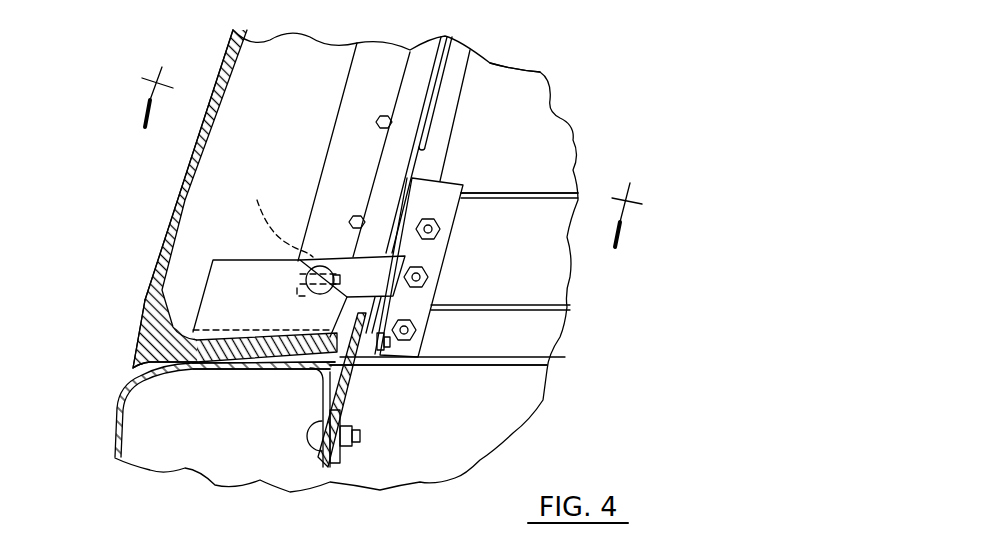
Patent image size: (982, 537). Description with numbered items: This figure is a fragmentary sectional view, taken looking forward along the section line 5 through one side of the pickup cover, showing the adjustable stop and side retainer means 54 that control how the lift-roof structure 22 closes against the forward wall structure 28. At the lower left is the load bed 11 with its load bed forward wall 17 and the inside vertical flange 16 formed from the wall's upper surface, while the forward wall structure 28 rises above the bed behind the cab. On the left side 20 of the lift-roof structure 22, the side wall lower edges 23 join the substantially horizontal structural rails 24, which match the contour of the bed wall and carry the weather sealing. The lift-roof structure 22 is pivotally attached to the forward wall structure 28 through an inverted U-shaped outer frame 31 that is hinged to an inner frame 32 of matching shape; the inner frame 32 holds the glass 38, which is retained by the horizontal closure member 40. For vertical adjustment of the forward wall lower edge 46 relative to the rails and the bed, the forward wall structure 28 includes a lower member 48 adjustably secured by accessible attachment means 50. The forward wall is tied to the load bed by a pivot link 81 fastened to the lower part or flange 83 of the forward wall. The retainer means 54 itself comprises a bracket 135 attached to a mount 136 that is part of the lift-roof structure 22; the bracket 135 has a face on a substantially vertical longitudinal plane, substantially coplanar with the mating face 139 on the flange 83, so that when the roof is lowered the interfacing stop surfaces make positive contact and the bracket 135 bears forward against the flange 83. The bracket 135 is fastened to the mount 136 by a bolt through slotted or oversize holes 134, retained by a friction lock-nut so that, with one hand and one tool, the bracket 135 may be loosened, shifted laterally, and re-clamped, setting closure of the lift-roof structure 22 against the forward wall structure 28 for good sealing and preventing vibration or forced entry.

The section line 5- 5 is at (384, 157).
The load bed 11 is at (118, 418).
The inside vertical flange 16 is at (307, 393).
The load bed forward wall 17 is at (505, 411).
The left side 20 is at (163, 242).
The lift-roof structure 22 is at (180, 176).
The side wall lower edges 23 is at (136, 366).
The structural rails 24 is at (226, 358).
The forward wall structure 28 is at (567, 197).
The outer frame 31 is at (397, 157).
The inner frame 32 is at (452, 105).
The glass 38 is at (537, 120).
The horizontal closure member 40 is at (567, 278).
The forward wall lower edge 46 is at (533, 352).
The lower member 48 is at (529, 341).
The attachment means 50 is at (417, 325).
The adjustable stop and side retainer means 54 is at (253, 268).
The pivot link 81 is at (350, 392).
The flange 83 is at (417, 205).
The slotted and/or oversize holes 134 is at (269, 216).
The bracket 135 is at (323, 265).
The mount 136 is at (253, 309).
The mating face 139 is at (423, 247).